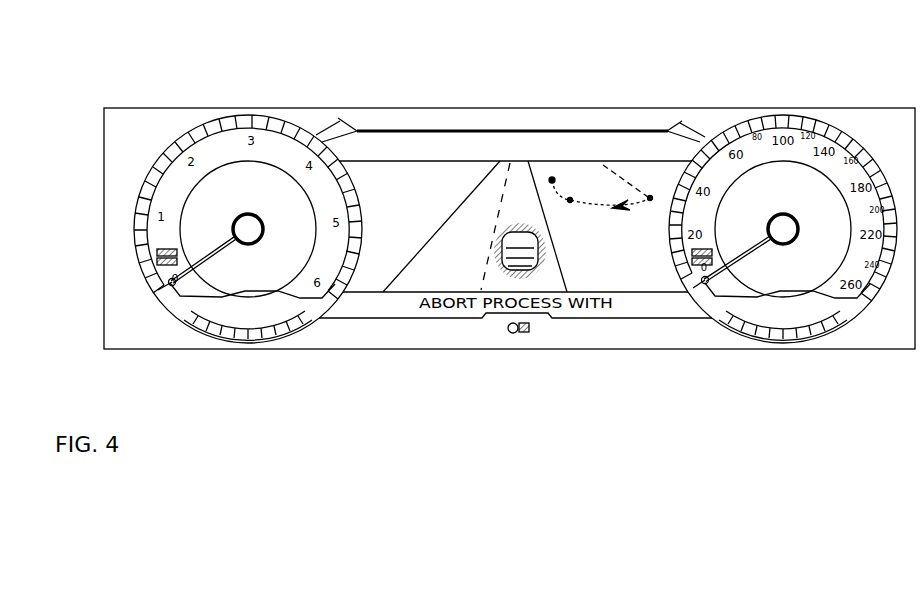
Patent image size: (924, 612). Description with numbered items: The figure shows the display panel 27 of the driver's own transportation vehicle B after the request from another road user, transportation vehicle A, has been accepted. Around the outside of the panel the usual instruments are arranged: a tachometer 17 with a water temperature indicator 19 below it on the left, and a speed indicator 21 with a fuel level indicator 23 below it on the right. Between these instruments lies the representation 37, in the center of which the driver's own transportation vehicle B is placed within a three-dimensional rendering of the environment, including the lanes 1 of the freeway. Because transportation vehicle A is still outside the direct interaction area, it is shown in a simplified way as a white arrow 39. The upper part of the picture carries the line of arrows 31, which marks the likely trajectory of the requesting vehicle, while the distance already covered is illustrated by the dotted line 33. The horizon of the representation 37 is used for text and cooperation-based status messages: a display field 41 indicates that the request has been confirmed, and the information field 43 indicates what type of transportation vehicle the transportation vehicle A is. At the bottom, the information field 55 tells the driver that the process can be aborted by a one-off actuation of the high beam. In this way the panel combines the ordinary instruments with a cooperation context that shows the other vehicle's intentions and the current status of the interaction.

The lanes 1 is at (515, 203).
The transportation vehicle B is at (497, 235).
The tachometer 17 is at (217, 300).
The water temperature indicator 19 is at (258, 332).
The speed indicator 21 is at (758, 269).
The fuel level indicator 23 is at (797, 330).
The display panel 27 is at (887, 137).
The line of arrows 31 is at (556, 180).
The dotted line 33 is at (570, 203).
The representation 37 is at (533, 88).
The white arrow 39 is at (622, 209).
The display field 41 is at (383, 147).
The information field 43 is at (629, 147).
The information field 55 is at (502, 337).